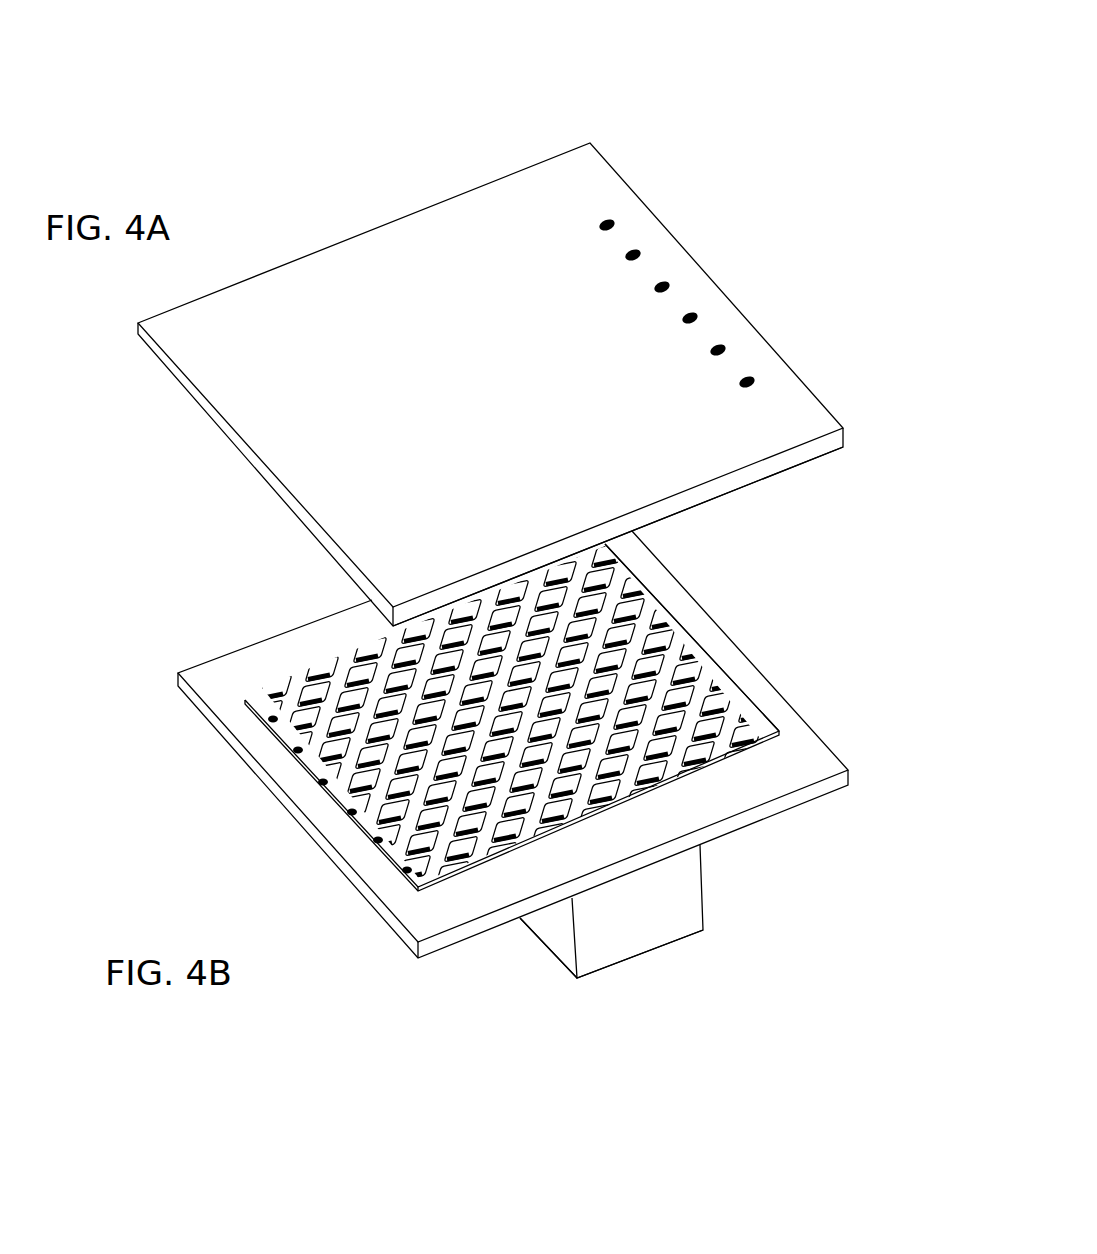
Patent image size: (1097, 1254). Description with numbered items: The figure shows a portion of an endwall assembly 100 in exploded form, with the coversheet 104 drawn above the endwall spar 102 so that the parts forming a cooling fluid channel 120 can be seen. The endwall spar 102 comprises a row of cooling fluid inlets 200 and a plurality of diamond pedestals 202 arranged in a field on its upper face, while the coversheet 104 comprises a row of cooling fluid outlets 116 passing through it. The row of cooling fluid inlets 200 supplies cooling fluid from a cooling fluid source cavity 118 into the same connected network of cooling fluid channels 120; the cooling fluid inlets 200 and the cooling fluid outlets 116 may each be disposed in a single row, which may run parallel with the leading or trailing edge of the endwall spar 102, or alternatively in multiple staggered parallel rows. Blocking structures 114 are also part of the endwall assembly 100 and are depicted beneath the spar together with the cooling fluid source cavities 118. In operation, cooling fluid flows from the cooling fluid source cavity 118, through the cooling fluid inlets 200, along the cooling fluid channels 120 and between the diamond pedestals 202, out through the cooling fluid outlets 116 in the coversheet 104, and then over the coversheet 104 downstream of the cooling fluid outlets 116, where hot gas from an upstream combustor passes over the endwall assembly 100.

In FIG. 4A, the endwall assembly 100 is at (196, 153).
In FIG. 4B, the endwall spar 102 is at (430, 922).
In FIG. 4A, the coversheet 104 is at (508, 253).
In FIG. 4A, the blocking structures 114 is at (557, 540).
In FIG. 4B, the blocking structures 114 is at (627, 923).
In FIG. 4A, the cooling fluid outlets 116 is at (690, 318).
In FIG. 4B, the cooling fluid source cavity 118 is at (513, 957).
In FIG. 4B, the cooling fluid channel 120 is at (715, 770).
In FIG. 4B, the cooling fluid inlets 200 is at (407, 873).
In FIG. 4B, the diamond pedestals 202 is at (392, 654).